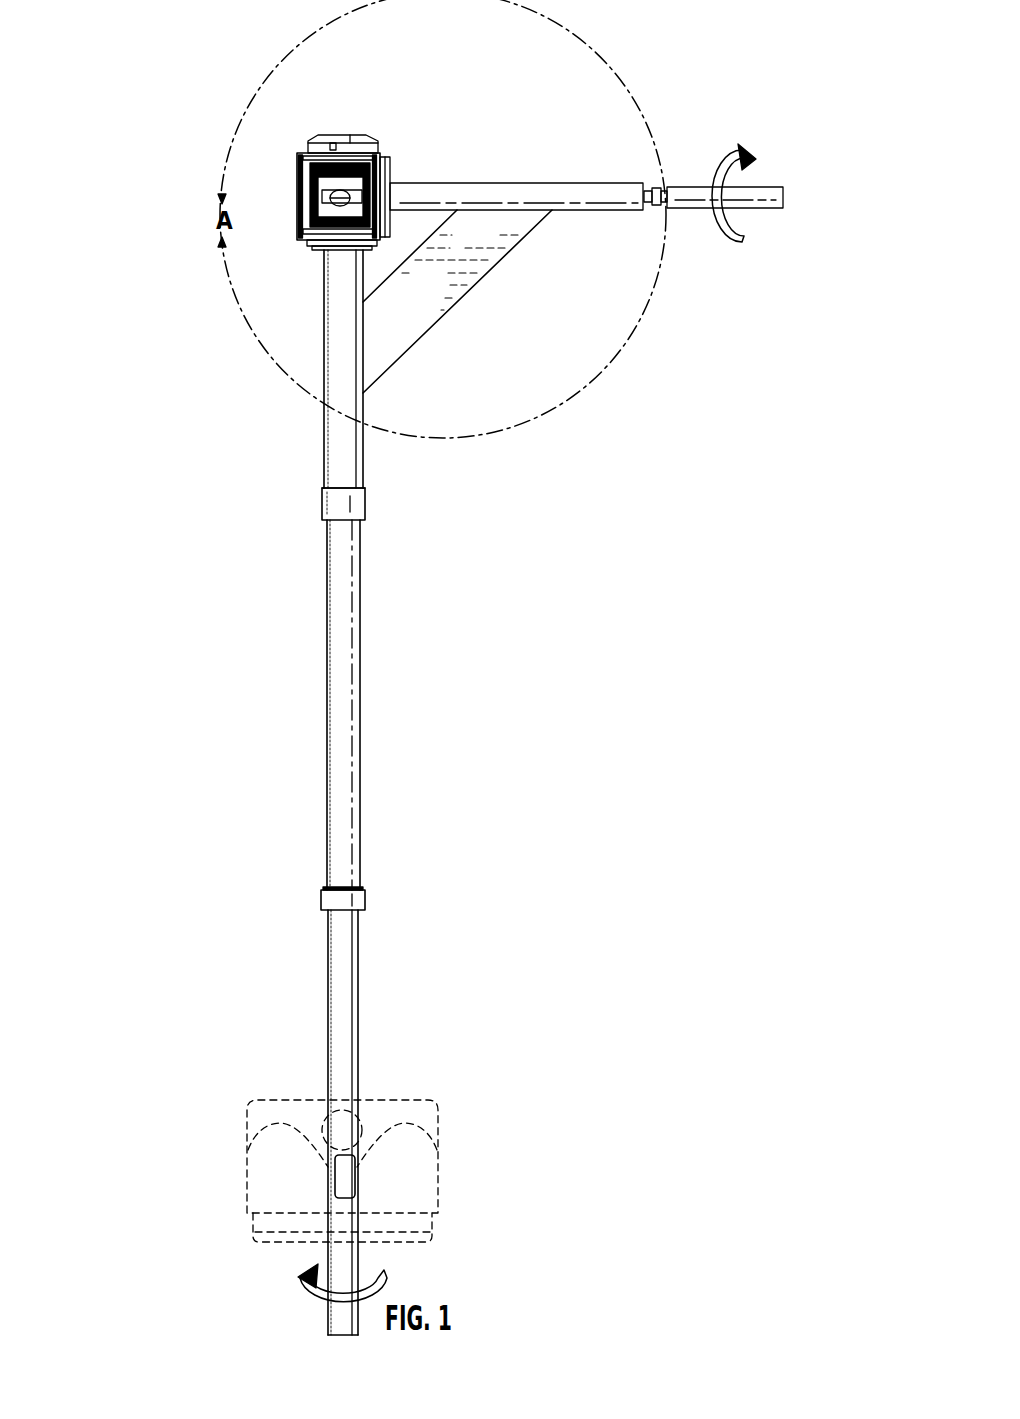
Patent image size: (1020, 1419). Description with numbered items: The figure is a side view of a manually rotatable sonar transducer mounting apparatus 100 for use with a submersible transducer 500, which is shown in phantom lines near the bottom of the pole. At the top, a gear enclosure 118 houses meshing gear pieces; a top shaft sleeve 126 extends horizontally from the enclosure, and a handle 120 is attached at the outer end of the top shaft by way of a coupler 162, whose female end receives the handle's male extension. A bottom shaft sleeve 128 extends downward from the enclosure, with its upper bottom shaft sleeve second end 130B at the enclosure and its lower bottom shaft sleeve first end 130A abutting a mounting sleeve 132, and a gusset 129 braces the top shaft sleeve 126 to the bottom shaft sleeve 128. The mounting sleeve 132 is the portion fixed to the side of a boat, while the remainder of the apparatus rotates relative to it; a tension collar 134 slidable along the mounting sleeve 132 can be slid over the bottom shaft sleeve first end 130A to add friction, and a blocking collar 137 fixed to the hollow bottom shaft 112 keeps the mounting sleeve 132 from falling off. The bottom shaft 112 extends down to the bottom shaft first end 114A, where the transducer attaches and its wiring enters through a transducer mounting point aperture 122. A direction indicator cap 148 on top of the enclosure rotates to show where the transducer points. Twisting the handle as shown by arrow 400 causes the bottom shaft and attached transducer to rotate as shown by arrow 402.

The manually rotatable sonar transducer mounting apparatus 100 is at (160, 84).
The direction indicator cap 148 is at (340, 138).
The gear enclosure 118 is at (388, 160).
The top shaft sleeve 126 is at (528, 190).
The handle 120 is at (697, 186).
The coupler 162 is at (653, 210).
The arrow 400 is at (718, 243).
The bottom shaft sleeve second end 130B is at (330, 256).
The gusset 129 is at (413, 326).
The bottom shaft sleeve 128 is at (333, 448).
The bottom shaft sleeve first end 130A is at (324, 489).
The tension collar 134 is at (355, 508).
The mounting sleeve 132 is at (345, 697).
The blocking collar 137 is at (356, 900).
The bottom shaft 112 is at (342, 988).
The submersible transducer 500 is at (255, 1102).
The transducer mounting point aperture 122 is at (348, 1186).
The arrow 402 is at (300, 1278).
The bottom shaft first end 114A is at (343, 1337).